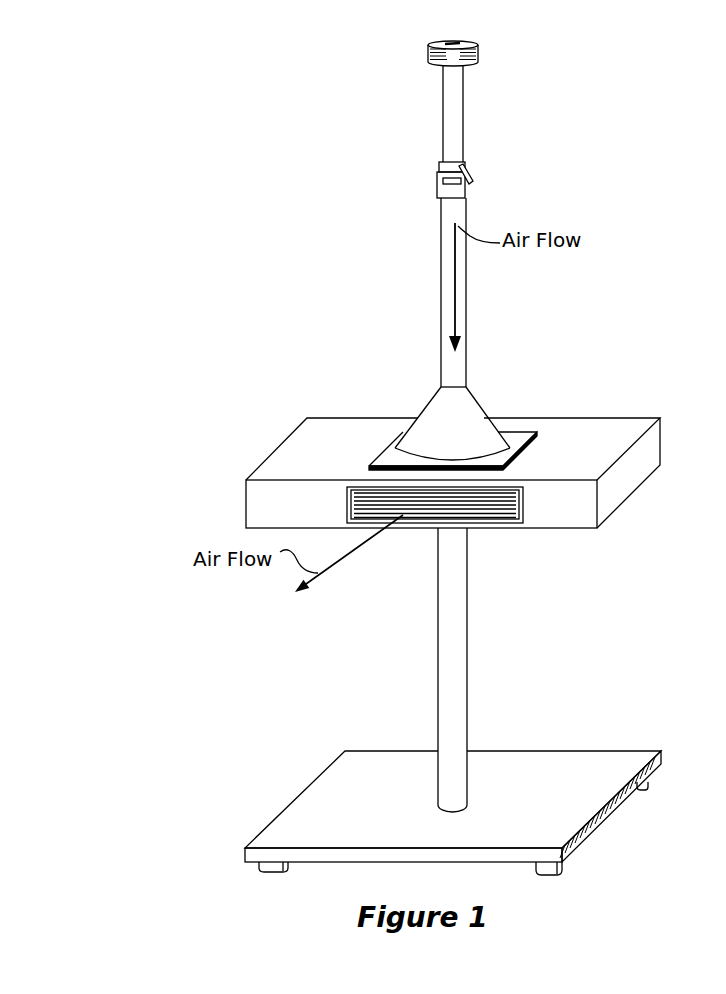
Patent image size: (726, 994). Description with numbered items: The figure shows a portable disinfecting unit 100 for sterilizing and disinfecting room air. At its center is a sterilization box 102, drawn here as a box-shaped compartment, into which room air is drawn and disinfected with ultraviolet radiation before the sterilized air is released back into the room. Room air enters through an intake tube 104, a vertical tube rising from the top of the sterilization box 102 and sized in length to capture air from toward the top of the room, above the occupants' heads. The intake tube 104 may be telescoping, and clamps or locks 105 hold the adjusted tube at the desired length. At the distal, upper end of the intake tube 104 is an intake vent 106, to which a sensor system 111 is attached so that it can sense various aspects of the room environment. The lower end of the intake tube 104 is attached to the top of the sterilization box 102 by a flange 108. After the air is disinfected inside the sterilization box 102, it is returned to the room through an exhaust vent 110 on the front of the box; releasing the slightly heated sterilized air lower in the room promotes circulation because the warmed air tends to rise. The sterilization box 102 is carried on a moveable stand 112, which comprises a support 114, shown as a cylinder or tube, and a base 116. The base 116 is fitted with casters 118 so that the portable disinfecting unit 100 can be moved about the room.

The portable disinfecting unit 100 is at (280, 124).
The sterilization box 102 is at (568, 428).
The intake tube 104 is at (439, 268).
The clamps or locks 105 is at (441, 164).
The intake vent 106 is at (466, 66).
The flange 108 is at (462, 390).
The exhaust vent 110 is at (490, 515).
The sensor system 111 is at (455, 43).
The moveable stand 112 is at (390, 660).
The support 114 is at (455, 688).
The base 116 is at (595, 810).
The casters 118 is at (547, 873).